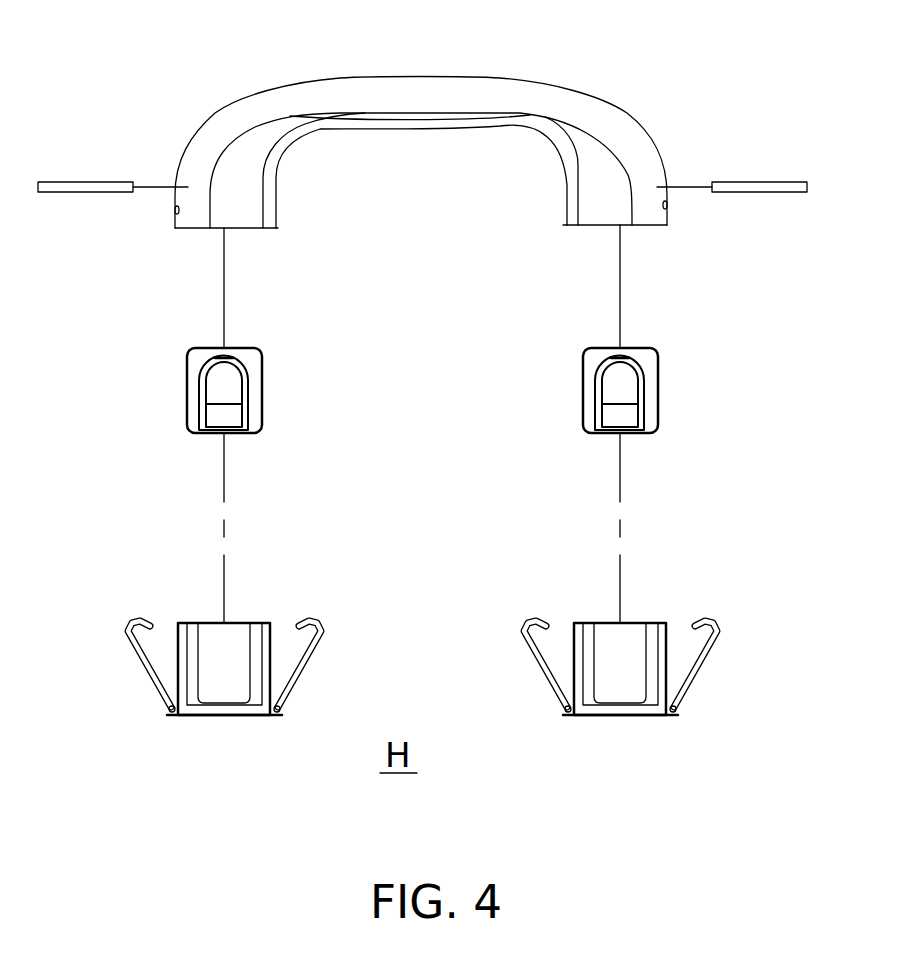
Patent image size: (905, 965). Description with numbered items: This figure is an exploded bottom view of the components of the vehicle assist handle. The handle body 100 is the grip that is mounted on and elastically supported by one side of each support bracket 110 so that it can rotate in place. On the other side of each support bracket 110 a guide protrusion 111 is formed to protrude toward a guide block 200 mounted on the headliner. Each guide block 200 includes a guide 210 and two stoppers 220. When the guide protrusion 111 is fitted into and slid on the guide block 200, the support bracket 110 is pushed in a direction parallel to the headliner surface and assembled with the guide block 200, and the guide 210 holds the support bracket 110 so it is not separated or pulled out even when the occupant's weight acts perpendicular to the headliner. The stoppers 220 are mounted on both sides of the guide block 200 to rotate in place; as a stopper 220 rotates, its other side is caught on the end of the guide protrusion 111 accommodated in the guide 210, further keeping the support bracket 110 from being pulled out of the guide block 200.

The handle body 100 is at (432, 88).
The support bracket 110 is at (217, 392).
The guide protrusion 111 is at (259, 391).
The guide block 200 is at (258, 708).
The guide 210 is at (253, 630).
The stopper 220 is at (148, 668).